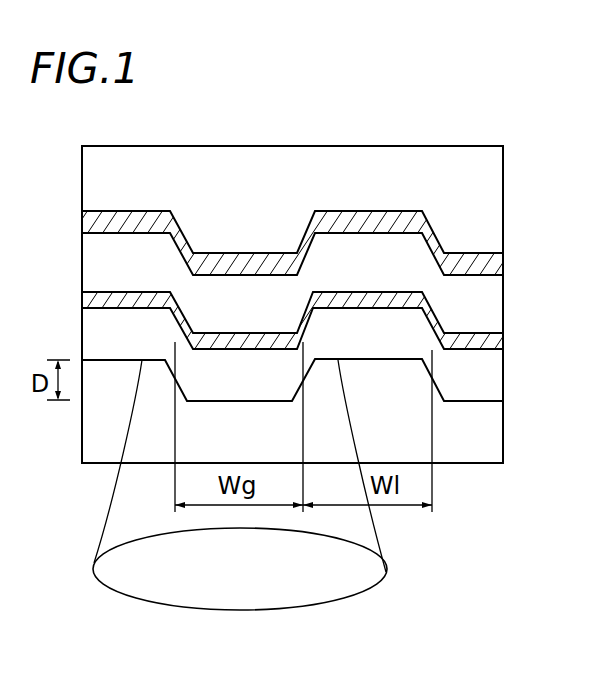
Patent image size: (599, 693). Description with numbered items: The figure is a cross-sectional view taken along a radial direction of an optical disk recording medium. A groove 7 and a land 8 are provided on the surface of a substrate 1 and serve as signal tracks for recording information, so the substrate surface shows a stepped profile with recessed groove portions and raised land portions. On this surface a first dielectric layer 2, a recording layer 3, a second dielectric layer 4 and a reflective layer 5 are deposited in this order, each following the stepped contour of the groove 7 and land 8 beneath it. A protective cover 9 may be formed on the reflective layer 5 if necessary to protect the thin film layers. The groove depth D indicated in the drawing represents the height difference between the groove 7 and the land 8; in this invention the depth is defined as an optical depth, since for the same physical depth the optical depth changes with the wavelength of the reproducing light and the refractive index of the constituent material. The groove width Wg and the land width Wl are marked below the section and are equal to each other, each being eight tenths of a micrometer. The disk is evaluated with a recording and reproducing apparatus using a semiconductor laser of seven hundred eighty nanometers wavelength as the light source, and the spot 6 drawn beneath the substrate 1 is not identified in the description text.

The substrate 1 is at (492, 425).
The first dielectric layer 2 is at (492, 378).
The recording layer 3 is at (498, 342).
The second dielectric layer 4 is at (490, 302).
The reflective layer 5 is at (487, 265).
The light beam spot 6 is at (385, 573).
The groove 7 is at (245, 262).
The land 8 is at (372, 218).
The protective cover 9 is at (485, 190).